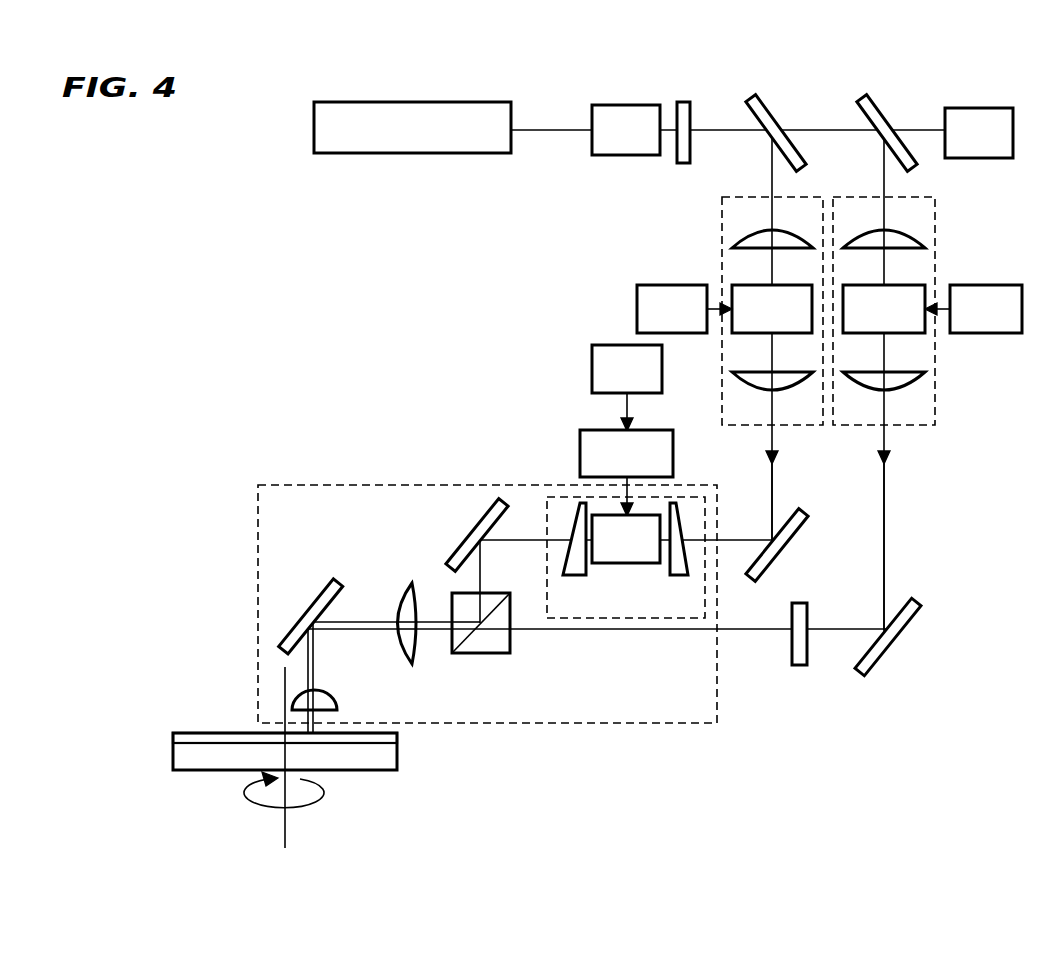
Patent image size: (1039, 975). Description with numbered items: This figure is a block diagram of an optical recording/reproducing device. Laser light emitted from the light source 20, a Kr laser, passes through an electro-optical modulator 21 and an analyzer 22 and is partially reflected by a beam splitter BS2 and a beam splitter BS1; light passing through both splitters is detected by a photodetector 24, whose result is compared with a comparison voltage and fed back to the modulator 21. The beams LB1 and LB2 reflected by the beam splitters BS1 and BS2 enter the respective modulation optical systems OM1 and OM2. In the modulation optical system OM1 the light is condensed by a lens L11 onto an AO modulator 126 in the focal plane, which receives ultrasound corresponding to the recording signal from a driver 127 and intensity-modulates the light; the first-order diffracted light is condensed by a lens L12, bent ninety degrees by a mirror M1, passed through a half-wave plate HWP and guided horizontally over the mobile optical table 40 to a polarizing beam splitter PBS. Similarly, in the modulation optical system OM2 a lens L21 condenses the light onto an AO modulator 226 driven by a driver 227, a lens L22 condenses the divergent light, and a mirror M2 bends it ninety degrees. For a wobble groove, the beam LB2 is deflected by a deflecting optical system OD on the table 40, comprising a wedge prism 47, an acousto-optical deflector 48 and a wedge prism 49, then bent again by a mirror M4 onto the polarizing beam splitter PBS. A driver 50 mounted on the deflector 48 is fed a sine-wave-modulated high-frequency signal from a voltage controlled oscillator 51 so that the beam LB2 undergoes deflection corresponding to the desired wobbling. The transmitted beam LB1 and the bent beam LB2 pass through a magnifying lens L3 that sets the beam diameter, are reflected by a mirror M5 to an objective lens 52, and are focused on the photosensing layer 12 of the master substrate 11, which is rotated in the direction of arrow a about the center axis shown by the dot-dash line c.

The light source 20 is at (417, 153).
The electro-optical modulator 21 is at (624, 105).
The analyzer 22 is at (681, 100).
The photodetector 24 is at (975, 108).
The AO modulator 226 is at (742, 285).
The AO modulator 126 is at (908, 285).
The driver 227 is at (637, 307).
The driver 127 is at (1006, 284).
The voltage controlled oscillator 51 is at (592, 372).
The driver 50 is at (580, 457).
The mobile optical table 40 is at (345, 485).
The wedge prism 49 is at (576, 578).
The acousto-optical deflector 48 is at (627, 563).
The wedge prism 47 is at (680, 578).
The objective lens 52 is at (337, 705).
The photosensing layer 12 is at (397, 740).
The master substrate 11 is at (397, 763).
The beam splitter BS2 is at (780, 120).
The beam splitter BS1 is at (891, 120).
The modulation optical system OM2 is at (768, 296).
The modulation optical system OM1 is at (893, 296).
The lens L21 is at (771, 223).
The lens L11 is at (882, 223).
The lens L22 is at (771, 397).
The lens L12 is at (882, 397).
The magnifying lens L3 is at (411, 607).
The mirror M1 is at (892, 636).
The mirror M2 is at (780, 546).
The mirror M4 is at (474, 532).
The mirror M5 is at (311, 612).
The λ/2 wave plate HWP is at (798, 650).
The polarizing beam splitter PBS is at (481, 642).
The deflecting optical system OD is at (708, 605).
The laser light beam LB1 is at (884, 518).
The laser light beam LB2 is at (772, 490).
The arrow a is at (258, 805).
The dot-dash line c is at (285, 826).